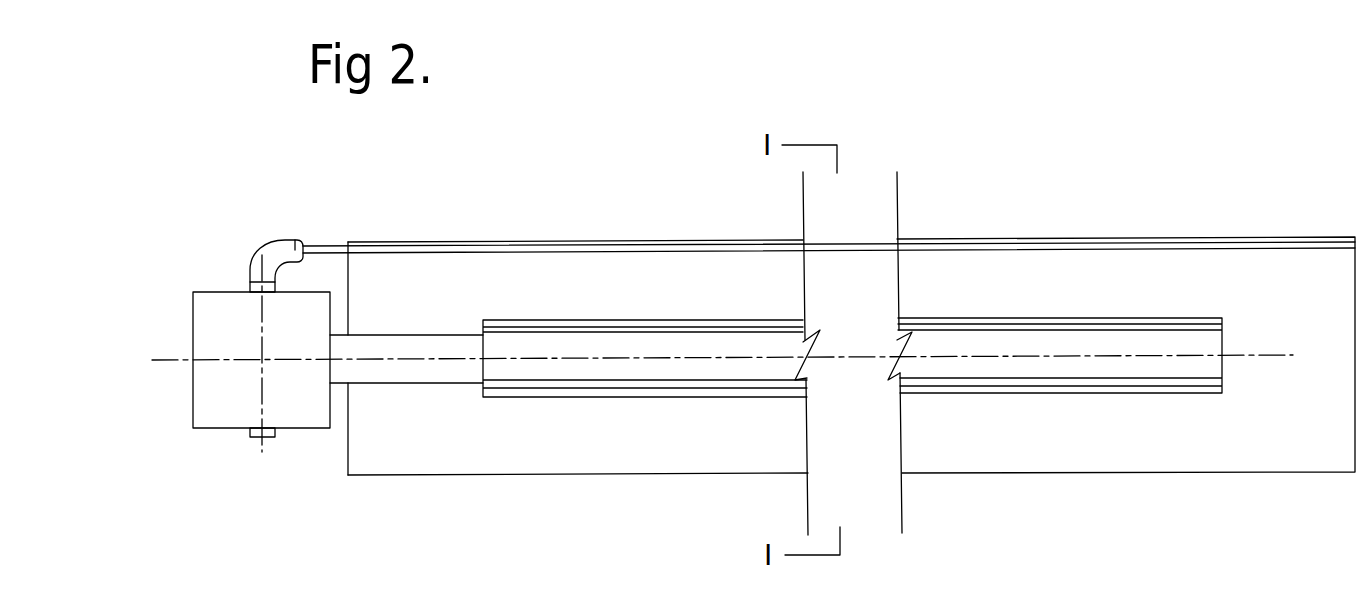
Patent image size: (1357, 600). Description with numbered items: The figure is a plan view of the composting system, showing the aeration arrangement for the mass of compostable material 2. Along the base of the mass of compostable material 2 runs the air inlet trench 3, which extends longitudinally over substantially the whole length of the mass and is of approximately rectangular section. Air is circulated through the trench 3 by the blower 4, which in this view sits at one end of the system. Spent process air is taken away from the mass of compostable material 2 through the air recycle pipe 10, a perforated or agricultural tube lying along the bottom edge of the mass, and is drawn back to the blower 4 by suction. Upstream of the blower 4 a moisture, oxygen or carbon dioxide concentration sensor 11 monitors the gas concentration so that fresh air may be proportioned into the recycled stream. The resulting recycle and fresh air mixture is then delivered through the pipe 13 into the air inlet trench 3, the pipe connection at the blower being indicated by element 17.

The mass of compostable material 2 is at (1298, 298).
The air inlet trench 3 is at (667, 345).
The blower 4 is at (222, 392).
The air recycle pipe 10 is at (302, 245).
The sensor 11 is at (1186, 543).
The pipe 13 is at (418, 368).
The elbow connector 17 is at (272, 258).